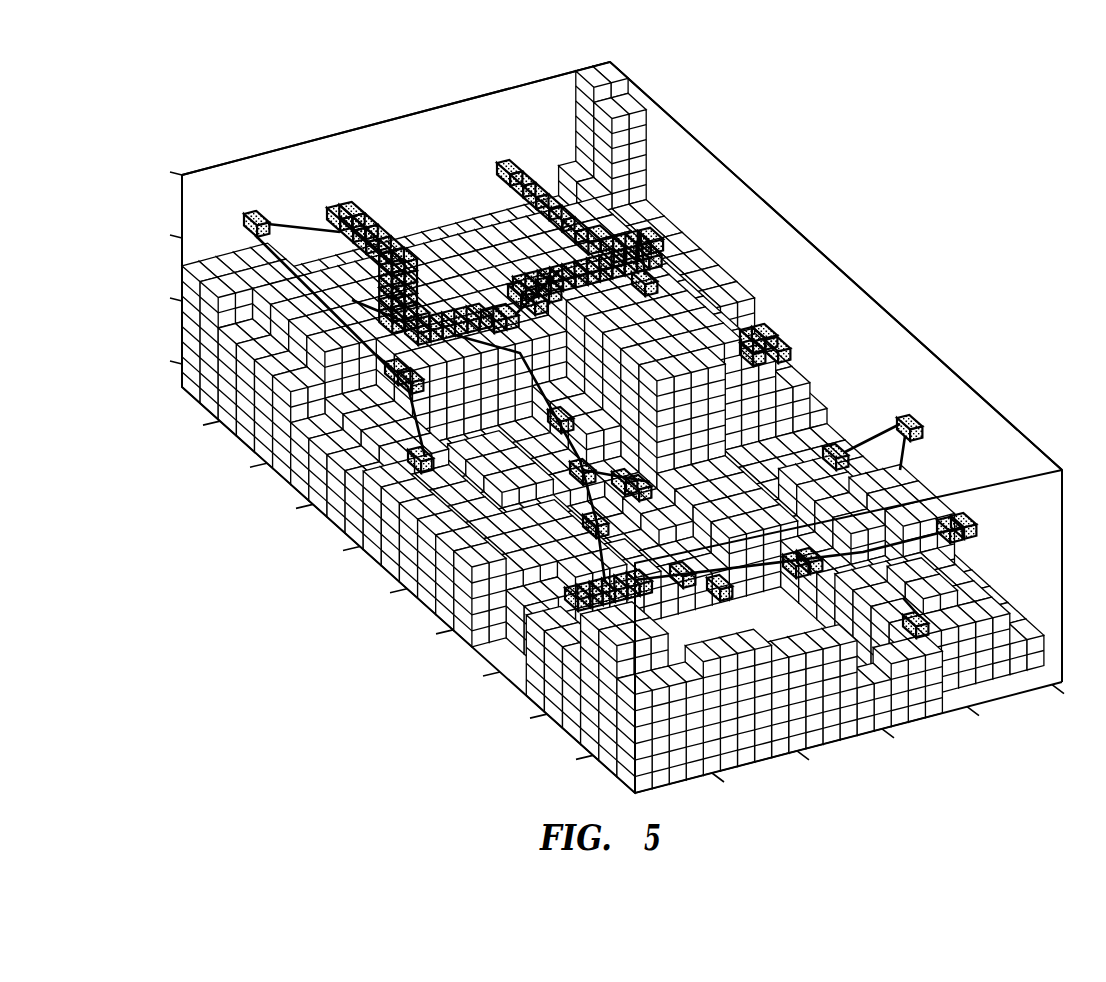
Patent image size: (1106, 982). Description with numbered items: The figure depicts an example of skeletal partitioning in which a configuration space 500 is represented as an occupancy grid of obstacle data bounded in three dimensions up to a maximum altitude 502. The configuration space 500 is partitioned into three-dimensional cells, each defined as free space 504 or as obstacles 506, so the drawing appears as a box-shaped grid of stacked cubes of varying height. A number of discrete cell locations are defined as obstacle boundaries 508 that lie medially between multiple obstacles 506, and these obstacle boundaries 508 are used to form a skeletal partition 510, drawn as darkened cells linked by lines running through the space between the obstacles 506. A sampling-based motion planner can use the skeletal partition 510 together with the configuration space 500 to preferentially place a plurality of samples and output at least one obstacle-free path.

The configuration space 500 is at (402, 89).
The maximum altitude 502 is at (190, 170).
The free space 504 is at (766, 235).
The obstacles 506 is at (612, 62).
The obstacle boundaries 508 is at (918, 414).
The skeletal partition 510 is at (292, 222).